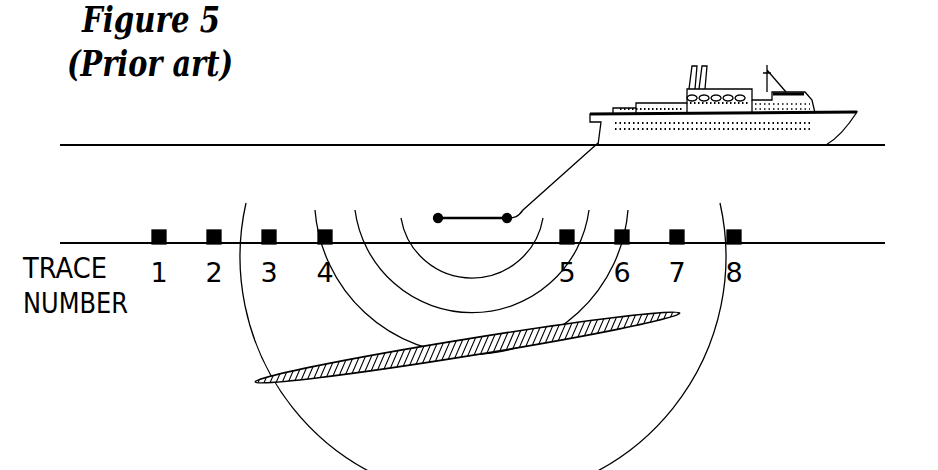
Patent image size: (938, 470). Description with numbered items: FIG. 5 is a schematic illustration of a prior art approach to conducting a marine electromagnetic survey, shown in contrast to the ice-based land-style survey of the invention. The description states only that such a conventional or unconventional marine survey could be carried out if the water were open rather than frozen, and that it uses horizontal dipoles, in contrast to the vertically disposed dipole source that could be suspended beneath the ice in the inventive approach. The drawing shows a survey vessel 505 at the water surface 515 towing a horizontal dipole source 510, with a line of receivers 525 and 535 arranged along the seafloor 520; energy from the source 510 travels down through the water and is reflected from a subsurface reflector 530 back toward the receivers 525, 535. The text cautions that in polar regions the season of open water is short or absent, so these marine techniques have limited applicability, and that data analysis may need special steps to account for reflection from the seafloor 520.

The seismic survey vessel 505 is at (803, 90).
The seismic source 510 is at (453, 212).
The water surface 515 is at (212, 145).
The sea floor / receiver line 520 is at (790, 245).
The seismic receivers (traces 1-2) 525 is at (213, 228).
The subsurface reflector 530 is at (645, 326).
The seismic receivers (traces 7-8) 535 is at (677, 228).